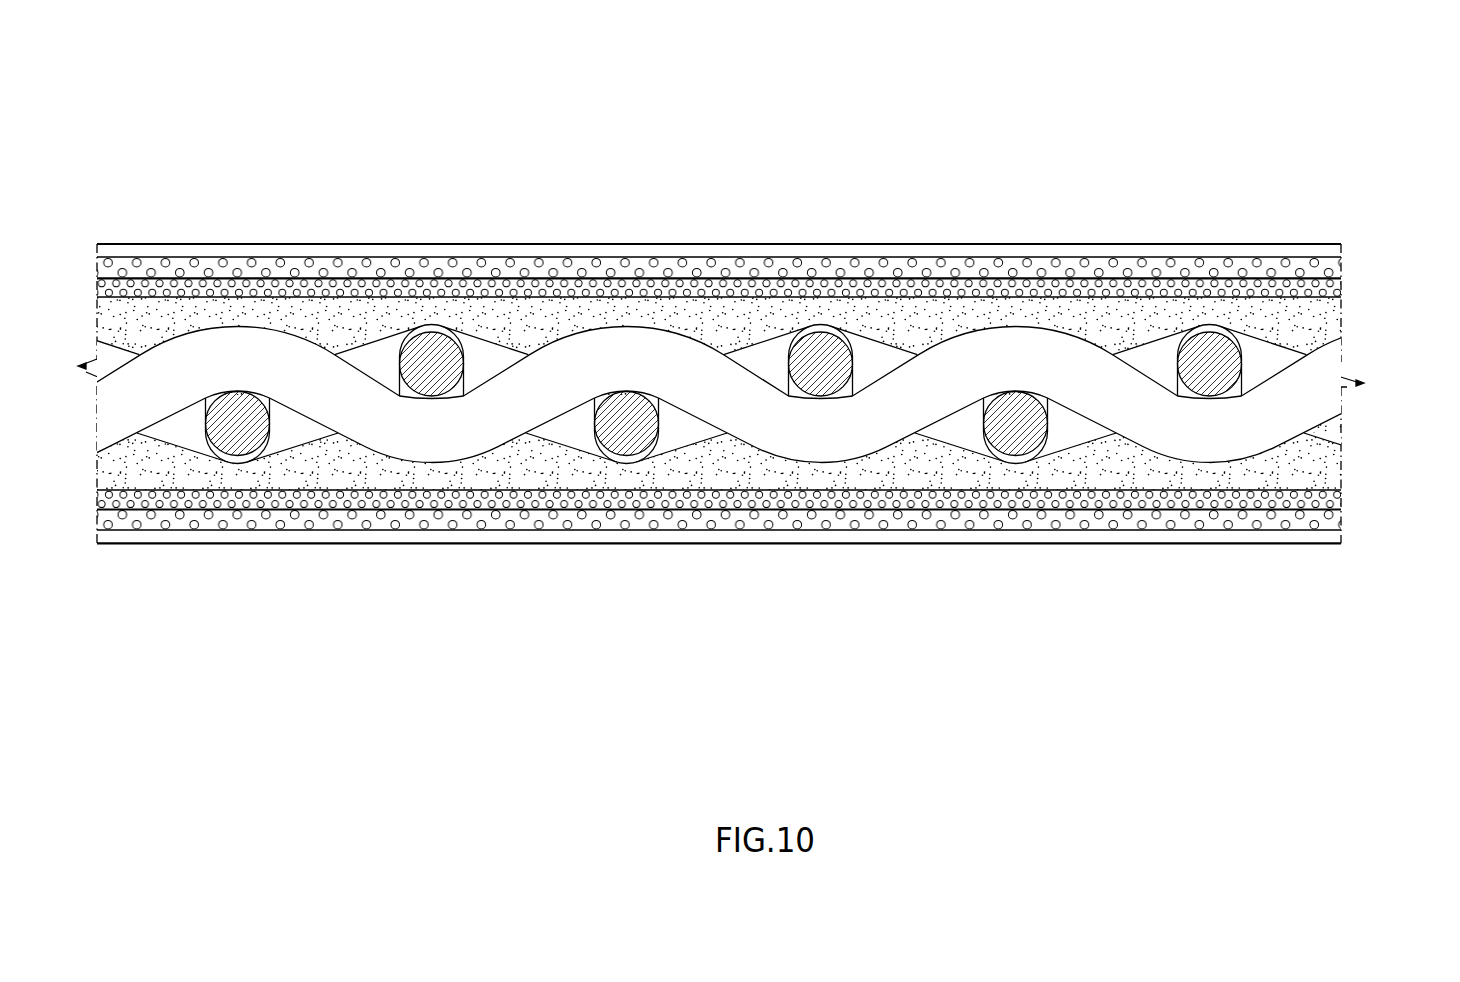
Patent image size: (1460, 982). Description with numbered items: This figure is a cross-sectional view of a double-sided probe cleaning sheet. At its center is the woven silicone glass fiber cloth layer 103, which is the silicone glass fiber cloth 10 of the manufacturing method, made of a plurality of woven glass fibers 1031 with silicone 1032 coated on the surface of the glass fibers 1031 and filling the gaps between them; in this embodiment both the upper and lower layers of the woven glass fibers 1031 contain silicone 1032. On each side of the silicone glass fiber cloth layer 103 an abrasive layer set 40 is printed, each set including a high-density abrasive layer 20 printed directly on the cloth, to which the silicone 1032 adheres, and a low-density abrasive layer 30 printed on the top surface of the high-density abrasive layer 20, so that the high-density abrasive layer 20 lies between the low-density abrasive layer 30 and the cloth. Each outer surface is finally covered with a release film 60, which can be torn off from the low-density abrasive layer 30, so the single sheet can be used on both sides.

The silicone glass fiber cloth 10 is at (1343, 368).
The high-density abrasive layer 20 is at (719, 397).
The low-density abrasive layer 30 is at (1343, 668).
The abrasive layer set 40 is at (772, 396).
The release film 60 is at (841, 248).
The silicone glass fiber cloth layer 103 is at (730, 517).
The glass fibers 1031 is at (403, 423).
The silicone 1032 is at (510, 472).